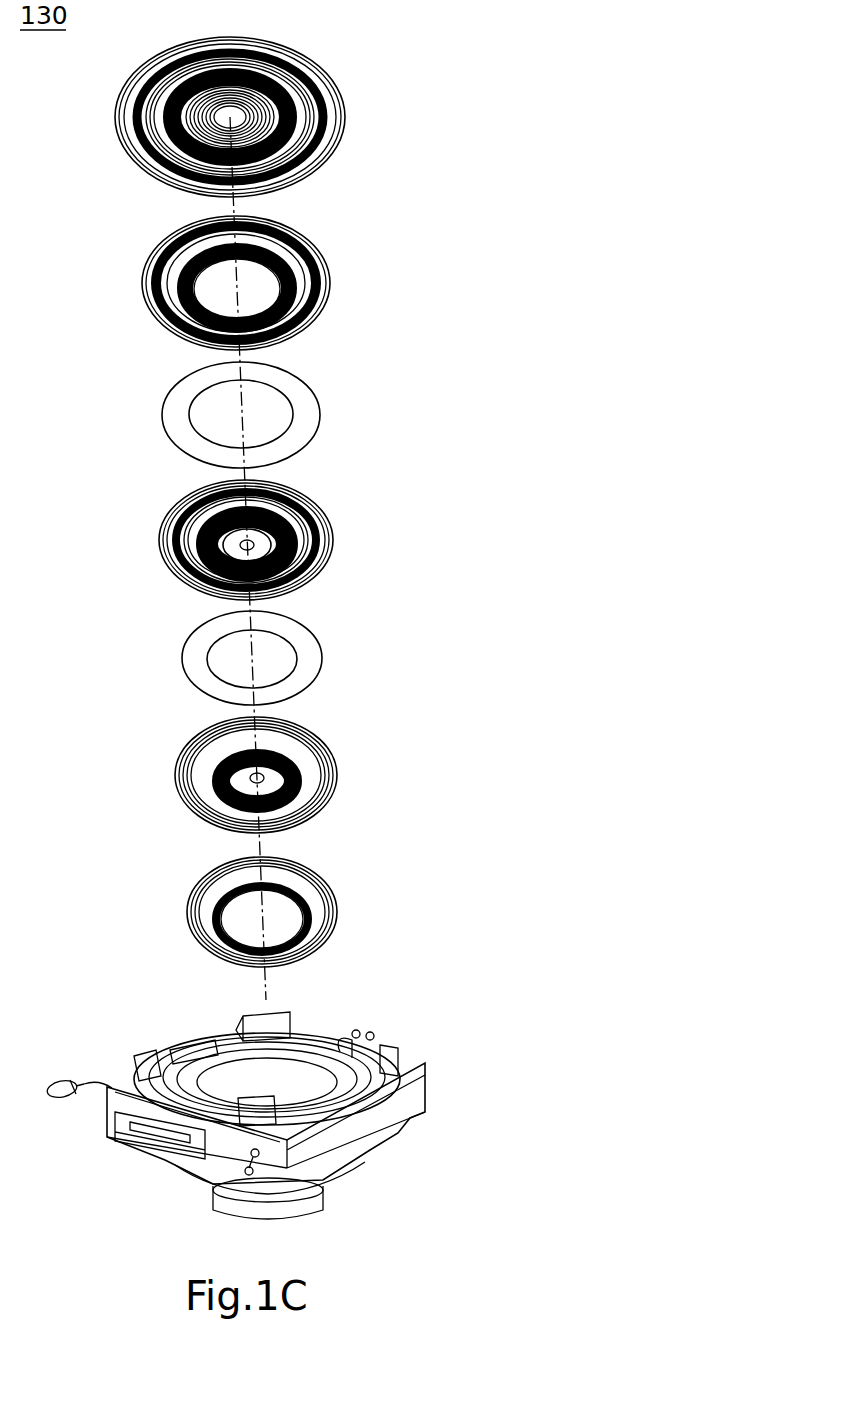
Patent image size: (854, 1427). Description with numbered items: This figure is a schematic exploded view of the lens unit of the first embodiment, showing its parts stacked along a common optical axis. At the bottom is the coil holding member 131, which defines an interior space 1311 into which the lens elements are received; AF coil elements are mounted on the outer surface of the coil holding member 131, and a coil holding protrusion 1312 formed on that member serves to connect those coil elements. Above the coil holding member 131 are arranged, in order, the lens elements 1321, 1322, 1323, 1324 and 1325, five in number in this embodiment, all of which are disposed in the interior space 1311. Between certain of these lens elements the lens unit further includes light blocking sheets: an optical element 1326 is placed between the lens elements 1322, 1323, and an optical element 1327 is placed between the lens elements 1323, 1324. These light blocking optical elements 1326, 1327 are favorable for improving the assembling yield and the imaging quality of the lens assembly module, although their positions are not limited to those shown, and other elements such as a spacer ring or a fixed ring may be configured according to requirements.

The coil holding member 131 is at (407, 1115).
The interior space 1311 is at (343, 1045).
The coil holding protrusion 1312 is at (160, 1138).
The lens element 1321 is at (337, 892).
The lens element 1322 is at (337, 761).
The lens element 1323 is at (333, 520).
The lens element 1324 is at (328, 262).
The lens element 1325 is at (333, 90).
The optical element 1326 is at (322, 656).
The optical element 1327 is at (320, 411).